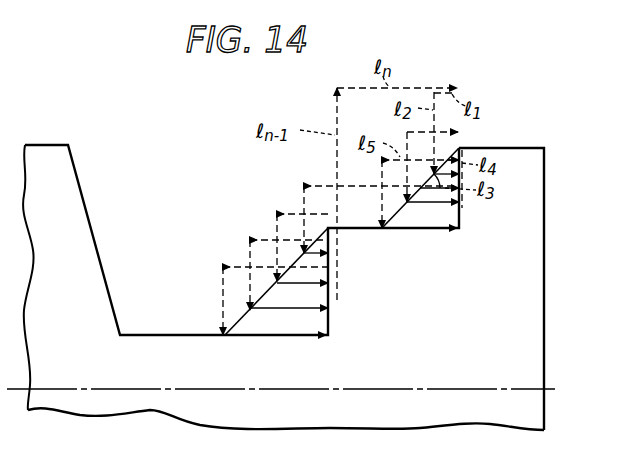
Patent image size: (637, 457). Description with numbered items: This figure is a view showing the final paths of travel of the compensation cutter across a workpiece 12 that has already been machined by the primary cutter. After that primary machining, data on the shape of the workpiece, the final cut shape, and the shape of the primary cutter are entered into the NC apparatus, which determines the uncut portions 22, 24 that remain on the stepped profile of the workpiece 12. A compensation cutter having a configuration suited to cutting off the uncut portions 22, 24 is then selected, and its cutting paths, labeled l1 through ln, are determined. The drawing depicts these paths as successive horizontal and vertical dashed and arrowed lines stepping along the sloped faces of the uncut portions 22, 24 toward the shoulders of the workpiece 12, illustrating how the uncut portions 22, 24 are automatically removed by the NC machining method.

The workpiece body 12 is at (535, 188).
The uncut portion 22 is at (275, 332).
The uncut portion 24 is at (421, 229).